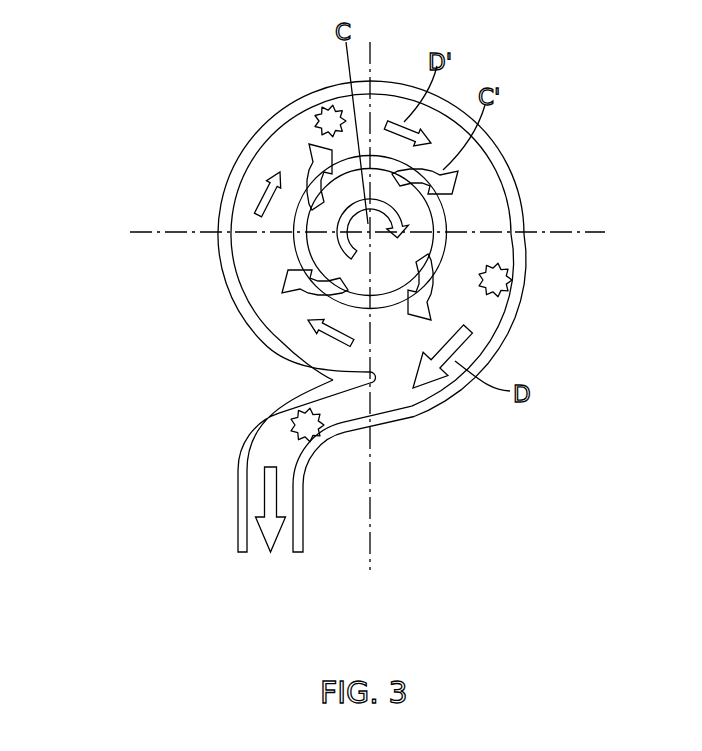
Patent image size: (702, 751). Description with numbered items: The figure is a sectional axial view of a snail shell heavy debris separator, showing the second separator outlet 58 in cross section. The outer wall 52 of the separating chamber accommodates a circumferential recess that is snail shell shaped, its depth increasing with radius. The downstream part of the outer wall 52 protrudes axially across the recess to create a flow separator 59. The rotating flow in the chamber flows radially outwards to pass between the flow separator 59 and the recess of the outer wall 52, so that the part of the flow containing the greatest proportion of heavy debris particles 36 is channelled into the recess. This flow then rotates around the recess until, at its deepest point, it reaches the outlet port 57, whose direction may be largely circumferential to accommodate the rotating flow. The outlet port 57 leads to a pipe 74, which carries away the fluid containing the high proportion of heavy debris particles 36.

The outer wall 52 is at (259, 125).
The flow separator 59 is at (447, 210).
The heavy debris particles 36 is at (503, 285).
The second separator outlet 58 is at (137, 333).
The pipe 74 is at (238, 488).
The outlet port 57 is at (398, 436).